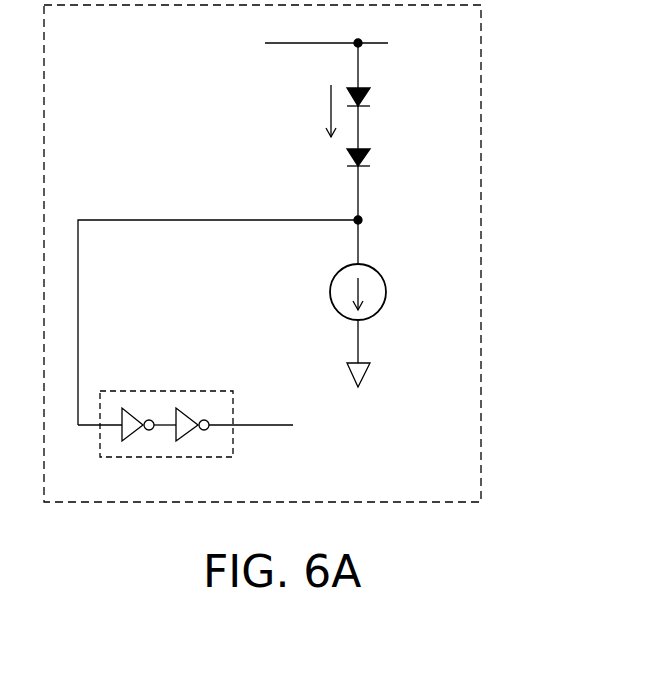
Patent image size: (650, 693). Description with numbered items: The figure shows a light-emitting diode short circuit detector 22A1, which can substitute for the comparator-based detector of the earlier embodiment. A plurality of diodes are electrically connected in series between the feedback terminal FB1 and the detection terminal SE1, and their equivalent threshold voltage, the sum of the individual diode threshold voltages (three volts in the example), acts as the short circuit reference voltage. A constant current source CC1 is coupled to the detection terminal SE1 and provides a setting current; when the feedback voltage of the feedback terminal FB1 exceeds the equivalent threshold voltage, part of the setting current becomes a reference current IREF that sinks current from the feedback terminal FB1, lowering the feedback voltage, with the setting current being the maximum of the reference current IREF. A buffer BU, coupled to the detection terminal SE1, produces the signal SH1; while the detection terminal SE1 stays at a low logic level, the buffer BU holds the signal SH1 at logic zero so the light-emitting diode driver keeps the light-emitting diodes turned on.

The light-emitting diode short circuit detector 22A1 is at (482, 70).
The feedback terminal FB1 is at (326, 31).
The reference current IREF is at (303, 111).
The detection terminal SE1 is at (218, 306).
The constant current source CC1 is at (386, 292).
The buffer BU is at (163, 391).
The signal SH1 is at (252, 412).